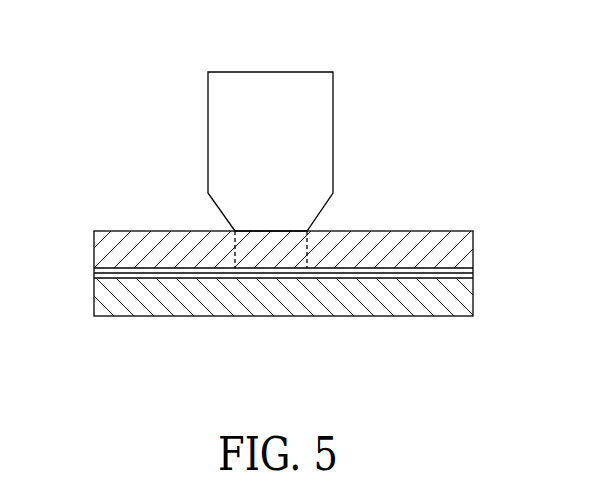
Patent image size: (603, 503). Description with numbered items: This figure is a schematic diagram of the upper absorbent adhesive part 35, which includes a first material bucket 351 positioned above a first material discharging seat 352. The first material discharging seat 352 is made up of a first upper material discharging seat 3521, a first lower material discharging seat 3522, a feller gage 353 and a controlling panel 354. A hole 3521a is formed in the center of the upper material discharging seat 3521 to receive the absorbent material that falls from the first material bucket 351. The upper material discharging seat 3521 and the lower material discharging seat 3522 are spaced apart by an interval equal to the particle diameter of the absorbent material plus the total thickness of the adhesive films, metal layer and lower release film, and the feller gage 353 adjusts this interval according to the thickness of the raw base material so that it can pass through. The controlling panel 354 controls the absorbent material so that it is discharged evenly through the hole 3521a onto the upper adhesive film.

The upper absorbent adhesive part 35 is at (43, 43).
The first material bucket 351 is at (325, 122).
The first material discharging seat 352 is at (313, 256).
The first upper material discharging seat 3521 is at (467, 245).
The hole 3521a is at (250, 246).
The controlling panel 354 is at (475, 270).
The feller gage 353 is at (476, 278).
The first lower material discharging seat 3522 is at (468, 295).